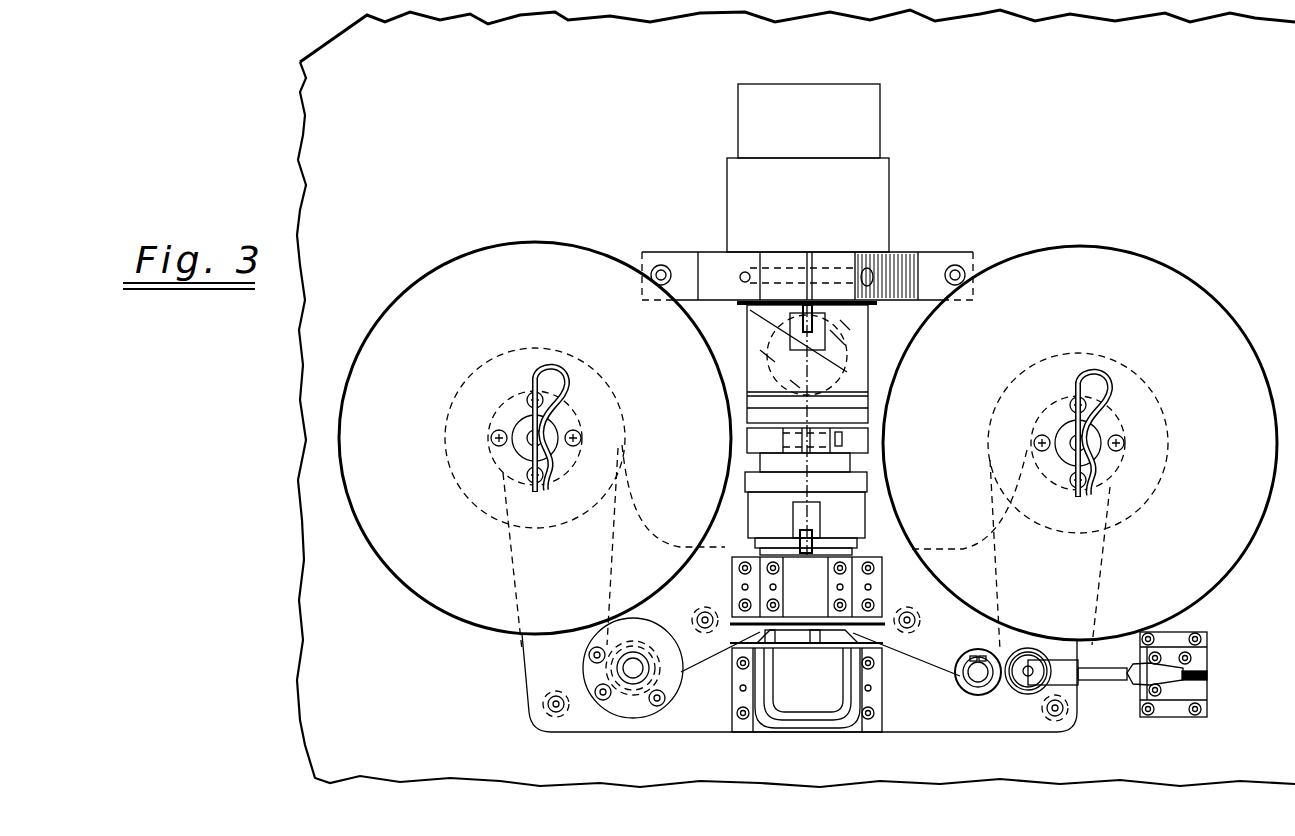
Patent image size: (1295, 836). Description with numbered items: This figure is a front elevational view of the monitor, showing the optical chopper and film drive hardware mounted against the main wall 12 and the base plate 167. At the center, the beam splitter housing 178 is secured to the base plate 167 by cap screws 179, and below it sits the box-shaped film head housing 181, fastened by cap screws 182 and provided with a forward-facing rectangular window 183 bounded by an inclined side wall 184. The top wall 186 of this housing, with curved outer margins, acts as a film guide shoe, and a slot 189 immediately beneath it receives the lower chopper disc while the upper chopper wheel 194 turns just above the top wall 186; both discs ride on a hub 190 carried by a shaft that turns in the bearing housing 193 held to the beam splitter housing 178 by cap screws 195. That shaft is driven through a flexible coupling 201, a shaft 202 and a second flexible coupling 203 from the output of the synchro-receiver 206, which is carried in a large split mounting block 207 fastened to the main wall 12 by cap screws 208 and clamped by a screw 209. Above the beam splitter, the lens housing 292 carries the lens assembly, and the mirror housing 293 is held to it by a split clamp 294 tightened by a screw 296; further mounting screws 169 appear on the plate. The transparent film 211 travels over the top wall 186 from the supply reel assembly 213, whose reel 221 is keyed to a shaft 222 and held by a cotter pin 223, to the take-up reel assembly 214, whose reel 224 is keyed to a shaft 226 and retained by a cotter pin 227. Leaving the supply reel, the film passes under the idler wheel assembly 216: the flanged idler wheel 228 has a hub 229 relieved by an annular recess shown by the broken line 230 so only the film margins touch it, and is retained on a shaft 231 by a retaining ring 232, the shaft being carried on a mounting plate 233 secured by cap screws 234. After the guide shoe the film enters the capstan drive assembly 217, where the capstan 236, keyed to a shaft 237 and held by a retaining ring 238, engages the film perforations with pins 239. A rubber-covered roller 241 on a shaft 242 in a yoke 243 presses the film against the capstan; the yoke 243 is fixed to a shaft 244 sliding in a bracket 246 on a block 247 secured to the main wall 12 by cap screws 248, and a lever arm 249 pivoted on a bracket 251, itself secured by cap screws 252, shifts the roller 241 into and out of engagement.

The main wall 12 is at (1145, 131).
The base plate 167 is at (528, 706).
The mounting screws 169 is at (912, 616).
The beam splitter housing 178 is at (872, 572).
The cap screws 179 is at (875, 602).
The film head housing 181 is at (765, 720).
The cap screws 182 is at (868, 722).
The window 183 is at (795, 714).
The inclined side wall 184 is at (825, 722).
The top wall 186 is at (885, 643).
The slot 189 is at (778, 643).
The hub 190 is at (815, 643).
The bearing housing 193 is at (818, 580).
The upper chopper wheel 194 is at (740, 622).
The cap screws 195 is at (838, 597).
The flexible coupling 201 is at (822, 512).
The shaft 202 is at (852, 372).
The flexible coupling 203 is at (747, 338).
The synchro-receiver 206 is at (826, 209).
The split mounting block 207 is at (710, 262).
The cap screws 208 is at (661, 266).
The screw 209 is at (872, 272).
The flexible elongate element 211 is at (707, 660).
The supply reel assembly 213 is at (473, 628).
The take-up reel assembly 214 is at (1240, 307).
The idler wheel assembly 216 is at (615, 724).
The capstan drive assembly 217 is at (968, 730).
The reel 221 is at (513, 304).
The shaft 222 is at (530, 440).
The cotter pin 223 is at (550, 412).
The reel 224 is at (1152, 306).
The shaft 226 is at (1072, 446).
The cotter pin 227 is at (1093, 415).
The flanged idler wheel 228 is at (615, 706).
The hub 229 is at (622, 625).
The broken line 230 is at (652, 622).
The shaft 231 is at (645, 635).
The retaining ring 232 is at (635, 680).
The mounting plate 233 is at (607, 643).
The cap screws 234 is at (652, 705).
The capstan 236 is at (975, 683).
The shaft 237 is at (962, 684).
The retaining ring 238 is at (985, 690).
The pins 239 is at (978, 648).
The rubber-covered roller 241 is at (1032, 650).
The shaft 242 is at (1030, 660).
The yoke 243 is at (1062, 660).
The shaft 244 is at (1105, 680).
The bracket 246 is at (1130, 686).
The block 247 is at (1178, 634).
The cap screws 248 is at (1185, 718).
The lever arm 249 is at (1185, 686).
The bracket 251 is at (1207, 664).
The cap screws 252 is at (1207, 655).
The lens housing 292 is at (792, 518).
The housing 293 is at (870, 406).
The split clamp 294 is at (857, 453).
The screw 296 is at (842, 441).